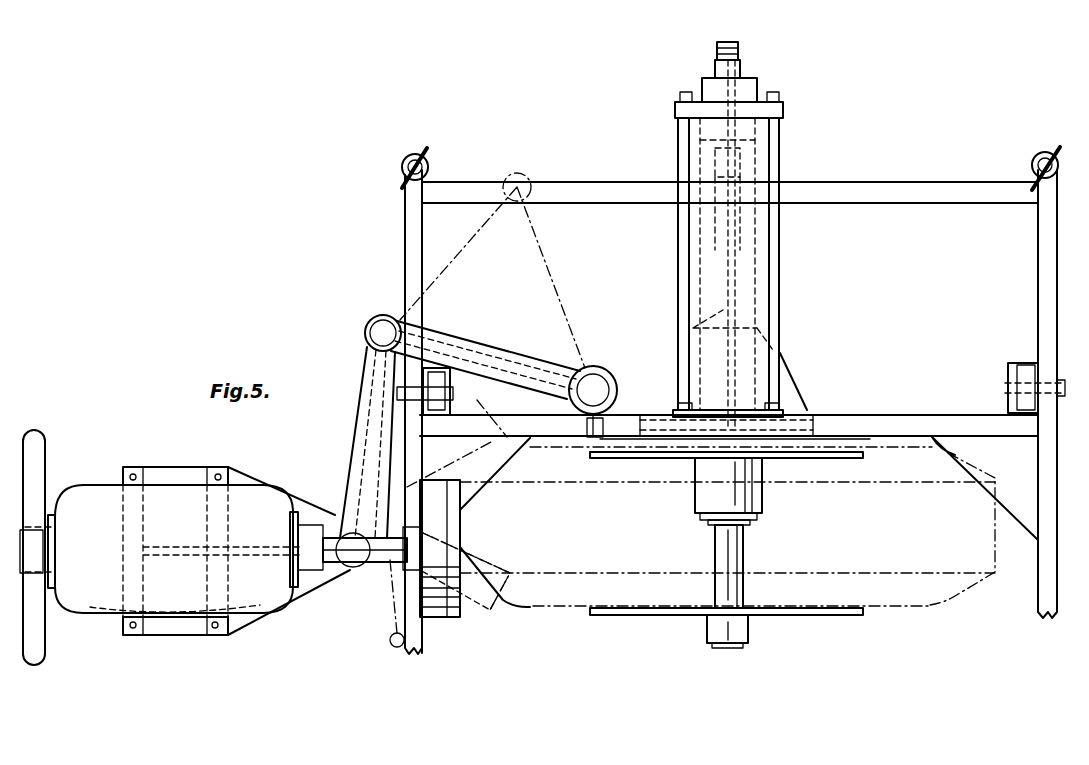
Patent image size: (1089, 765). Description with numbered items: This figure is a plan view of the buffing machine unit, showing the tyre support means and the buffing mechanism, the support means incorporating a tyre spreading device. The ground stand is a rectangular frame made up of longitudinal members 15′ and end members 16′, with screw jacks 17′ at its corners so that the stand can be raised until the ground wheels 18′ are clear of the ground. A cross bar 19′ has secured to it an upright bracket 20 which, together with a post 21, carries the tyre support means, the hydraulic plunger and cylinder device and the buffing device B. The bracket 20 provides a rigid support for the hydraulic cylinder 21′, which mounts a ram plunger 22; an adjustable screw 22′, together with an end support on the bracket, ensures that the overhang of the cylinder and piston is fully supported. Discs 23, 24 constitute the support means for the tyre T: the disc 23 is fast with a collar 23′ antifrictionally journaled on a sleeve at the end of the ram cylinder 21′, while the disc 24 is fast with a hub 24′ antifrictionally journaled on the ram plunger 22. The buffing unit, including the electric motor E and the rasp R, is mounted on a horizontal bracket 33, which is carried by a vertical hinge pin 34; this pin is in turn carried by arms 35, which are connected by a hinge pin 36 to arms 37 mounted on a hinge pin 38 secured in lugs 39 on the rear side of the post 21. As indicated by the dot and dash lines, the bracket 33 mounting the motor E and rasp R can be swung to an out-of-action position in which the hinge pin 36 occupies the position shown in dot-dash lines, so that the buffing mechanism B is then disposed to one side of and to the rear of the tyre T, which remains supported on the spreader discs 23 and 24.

The longitudinal member 15′ is at (405, 238).
The end member 16′ is at (910, 168).
The screw jack 17′ is at (428, 165).
The ground wheel 18′ is at (446, 370).
The cross bar 19′ is at (897, 414).
The upright bracket 20 is at (815, 434).
The post 21 is at (583, 430).
The hydraulic cylinder 21′ is at (780, 284).
The ram plunger 22 is at (743, 545).
The adjustable screw 22′ is at (740, 48).
The disc 23 is at (857, 460).
The collar 23′ is at (763, 435).
The disc 24 is at (840, 614).
The hub 24′ is at (713, 626).
The horizontal bracket 33 is at (324, 500).
The vertical hinge pin 34 is at (348, 561).
The arm 35 is at (360, 418).
The hinge pin 36 is at (380, 333).
The arm 37 is at (548, 335).
The hinge pin 38 is at (600, 370).
The lug 39 is at (611, 401).
The electric motor E is at (192, 536).
The buffing device B is at (275, 608).
The rasp R is at (435, 612).
The tyre T is at (722, 520).